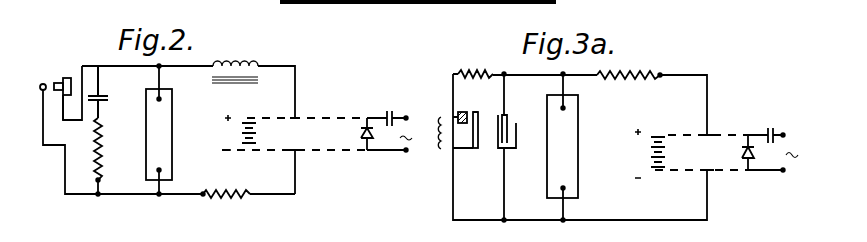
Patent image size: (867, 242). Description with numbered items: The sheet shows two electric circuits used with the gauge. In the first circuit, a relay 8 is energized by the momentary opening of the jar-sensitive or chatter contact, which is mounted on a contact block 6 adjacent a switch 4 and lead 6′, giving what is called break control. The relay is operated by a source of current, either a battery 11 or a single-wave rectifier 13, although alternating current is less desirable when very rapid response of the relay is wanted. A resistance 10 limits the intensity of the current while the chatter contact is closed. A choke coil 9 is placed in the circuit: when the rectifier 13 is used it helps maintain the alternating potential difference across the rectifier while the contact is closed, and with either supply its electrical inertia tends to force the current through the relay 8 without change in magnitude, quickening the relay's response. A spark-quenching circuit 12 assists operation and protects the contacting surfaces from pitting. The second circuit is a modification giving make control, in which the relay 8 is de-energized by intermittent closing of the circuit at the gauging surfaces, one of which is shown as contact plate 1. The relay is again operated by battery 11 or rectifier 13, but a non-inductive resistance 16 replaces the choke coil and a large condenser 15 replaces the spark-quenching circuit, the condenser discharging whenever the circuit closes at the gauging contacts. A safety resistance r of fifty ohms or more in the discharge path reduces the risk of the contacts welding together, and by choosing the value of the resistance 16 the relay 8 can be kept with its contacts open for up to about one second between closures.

In FIG. 3A, the gauging surface 1 is at (478, 137).
In FIG. 2, the switch / contact 4 is at (41, 108).
In FIG. 3A, the switch / contact 4 is at (480, 130).
In FIG. 2, the contact block 6 is at (72, 78).
In FIG. 2, the contact block lead 6′ is at (62, 110).
In FIG. 2, the relay 8 is at (172, 122).
In FIG. 3A, the relay 8 is at (578, 125).
In FIG. 2, the choke coil 9 is at (240, 61).
In FIG. 2, the resistance 10 is at (236, 203).
In FIG. 2, the battery 11 is at (231, 134).
In FIG. 3A, the battery 11 is at (642, 156).
In FIG. 2, the spark-quenching circuit 12 is at (96, 166).
In FIG. 2, the single-wave rectifier 13 is at (386, 154).
In FIG. 3A, the single-wave rectifier 13 is at (770, 175).
In FIG. 3A, the condenser 15 is at (496, 152).
In FIG. 3A, the non-inductive resistance 16 is at (654, 69).
In FIG. 3A, the safety resistance r is at (484, 66).